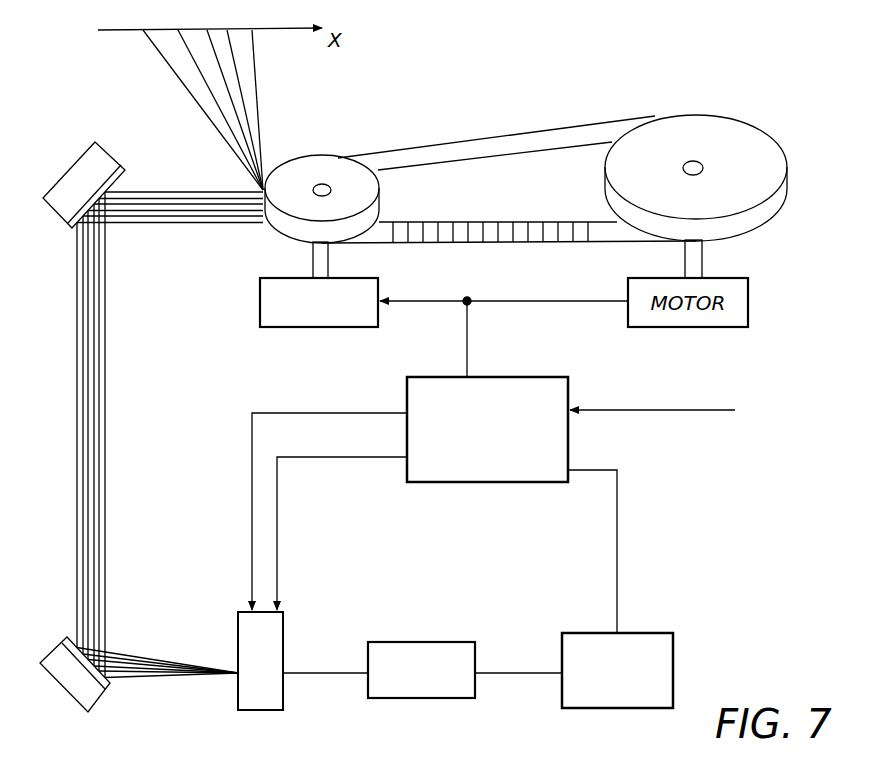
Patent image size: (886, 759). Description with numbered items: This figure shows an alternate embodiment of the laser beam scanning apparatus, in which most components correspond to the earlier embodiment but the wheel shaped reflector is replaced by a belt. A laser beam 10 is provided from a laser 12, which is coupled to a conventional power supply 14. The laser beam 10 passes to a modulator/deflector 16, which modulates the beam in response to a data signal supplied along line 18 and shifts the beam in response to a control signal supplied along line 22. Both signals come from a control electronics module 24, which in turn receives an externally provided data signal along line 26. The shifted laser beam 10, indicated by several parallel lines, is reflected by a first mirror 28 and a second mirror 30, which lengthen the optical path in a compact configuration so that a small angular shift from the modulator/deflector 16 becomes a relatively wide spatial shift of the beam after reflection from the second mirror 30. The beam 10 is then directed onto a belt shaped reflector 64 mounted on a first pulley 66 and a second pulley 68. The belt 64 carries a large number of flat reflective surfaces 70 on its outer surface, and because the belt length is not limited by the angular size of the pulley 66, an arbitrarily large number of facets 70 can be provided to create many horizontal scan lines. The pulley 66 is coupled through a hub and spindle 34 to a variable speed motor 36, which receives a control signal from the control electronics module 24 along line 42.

The laser beam 10 is at (170, 234).
The laser 12 is at (421, 699).
The power supply 14 is at (668, 688).
The modulator/deflector 16 is at (258, 711).
The line 18 is at (320, 460).
The line 22 is at (297, 413).
The control electronics module 24 is at (487, 483).
The line 26 is at (625, 410).
The first mirror 28 is at (65, 683).
The second mirror 30 is at (77, 155).
The hub and spindle 34 is at (313, 258).
The variable speed motor 36 is at (300, 328).
The line 42 is at (428, 300).
The belt shaped reflector 64 is at (462, 142).
The first pulley 66 is at (320, 155).
The second pulley 68 is at (754, 134).
The flat reflective surfaces 70 is at (585, 246).